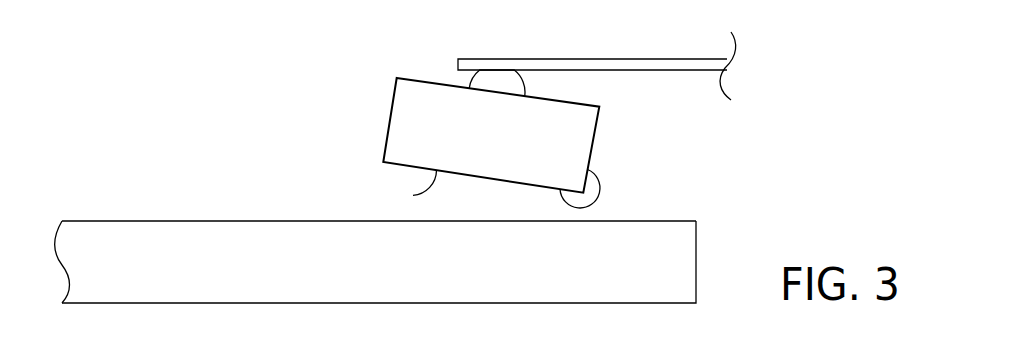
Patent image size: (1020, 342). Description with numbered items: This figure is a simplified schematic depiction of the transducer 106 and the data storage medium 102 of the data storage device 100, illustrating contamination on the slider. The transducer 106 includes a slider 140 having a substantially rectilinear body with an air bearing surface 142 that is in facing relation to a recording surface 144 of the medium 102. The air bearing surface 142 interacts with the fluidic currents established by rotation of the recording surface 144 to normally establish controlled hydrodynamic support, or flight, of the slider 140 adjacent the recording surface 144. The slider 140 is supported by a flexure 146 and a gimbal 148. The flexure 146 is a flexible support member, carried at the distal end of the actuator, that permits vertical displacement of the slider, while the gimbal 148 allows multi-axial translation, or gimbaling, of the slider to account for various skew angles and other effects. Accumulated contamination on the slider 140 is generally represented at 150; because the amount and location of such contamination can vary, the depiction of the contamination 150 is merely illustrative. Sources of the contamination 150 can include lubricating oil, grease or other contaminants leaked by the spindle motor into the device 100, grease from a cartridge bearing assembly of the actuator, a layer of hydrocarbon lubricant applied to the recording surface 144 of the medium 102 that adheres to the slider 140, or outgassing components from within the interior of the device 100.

The data storage device 100 is at (130, 78).
The data storage medium 102 is at (148, 222).
The transducer 106 is at (353, 45).
The slider 140 is at (388, 117).
The air bearing surface 142 is at (413, 195).
The recording surface 144 is at (242, 221).
The flexure 146 is at (592, 60).
The gimbal 148 is at (469, 87).
The contamination 150 is at (598, 178).